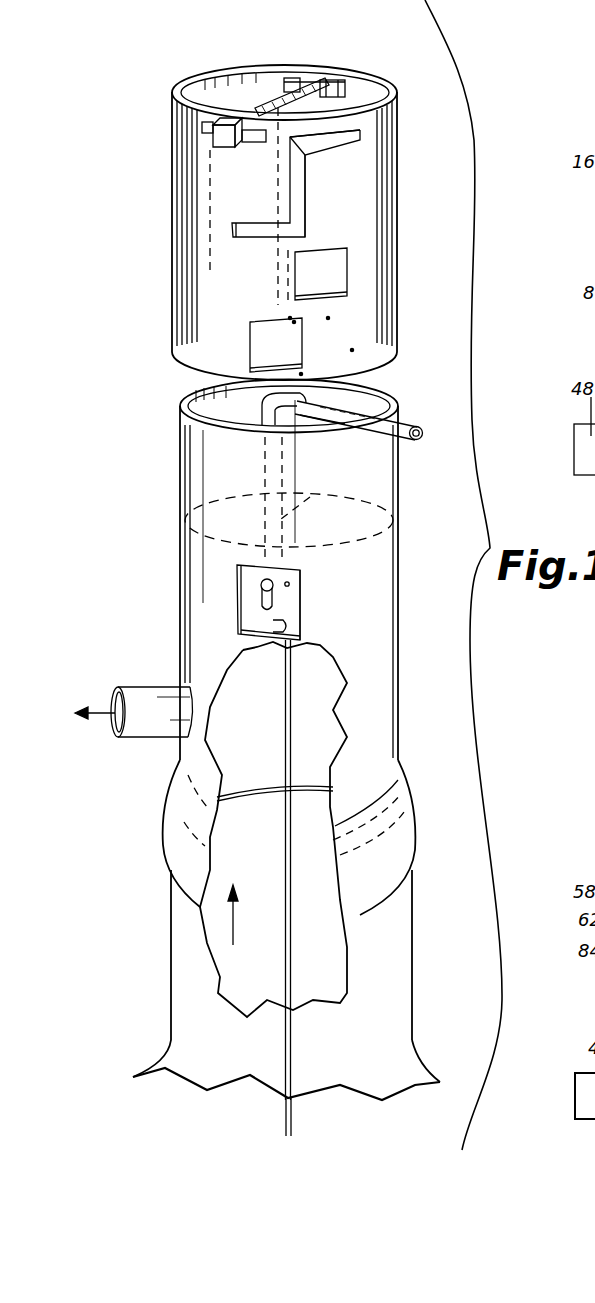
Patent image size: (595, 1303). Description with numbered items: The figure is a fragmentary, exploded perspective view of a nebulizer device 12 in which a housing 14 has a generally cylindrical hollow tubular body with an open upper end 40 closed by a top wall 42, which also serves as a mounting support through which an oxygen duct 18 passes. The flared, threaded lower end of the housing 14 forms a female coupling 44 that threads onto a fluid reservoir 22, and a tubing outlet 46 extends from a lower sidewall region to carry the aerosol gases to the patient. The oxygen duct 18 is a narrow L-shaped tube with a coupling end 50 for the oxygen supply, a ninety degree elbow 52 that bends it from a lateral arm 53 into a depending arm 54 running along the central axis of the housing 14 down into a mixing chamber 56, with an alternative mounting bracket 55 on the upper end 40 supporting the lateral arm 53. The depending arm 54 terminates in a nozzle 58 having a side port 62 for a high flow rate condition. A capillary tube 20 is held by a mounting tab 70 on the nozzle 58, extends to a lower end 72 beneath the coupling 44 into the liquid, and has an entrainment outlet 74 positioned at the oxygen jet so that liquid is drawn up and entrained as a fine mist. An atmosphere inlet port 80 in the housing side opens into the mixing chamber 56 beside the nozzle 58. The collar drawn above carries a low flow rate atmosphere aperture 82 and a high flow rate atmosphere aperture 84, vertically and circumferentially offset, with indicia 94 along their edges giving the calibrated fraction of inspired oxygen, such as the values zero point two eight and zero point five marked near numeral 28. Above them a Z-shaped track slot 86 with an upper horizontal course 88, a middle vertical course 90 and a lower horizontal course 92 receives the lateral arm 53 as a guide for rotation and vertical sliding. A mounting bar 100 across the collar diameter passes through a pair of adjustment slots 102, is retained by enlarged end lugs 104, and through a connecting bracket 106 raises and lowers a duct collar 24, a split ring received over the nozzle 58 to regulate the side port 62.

The nebulizer device 12 is at (76, 320).
The housing 14 is at (398, 586).
The oxygen duct 18 is at (380, 413).
The capillary tube 20 is at (284, 834).
The fluid reservoir 22 is at (166, 1040).
The duct collar 24 is at (192, 272).
The opening 28 is at (341, 314).
The open upper end 40 is at (207, 414).
The top wall 42 is at (183, 514).
The female coupling 44 is at (400, 815).
The tubing outlet 46 is at (148, 686).
The coupling end 50 is at (468, 440).
The ninety degree elbow 52 is at (270, 399).
The lateral arm 53 is at (360, 418).
The depending arm 54 is at (310, 497).
The alternative mounting bracket 55 is at (365, 386).
The mixing chamber 56 is at (262, 712).
The nozzle 58 is at (265, 612).
The side port 62 is at (265, 580).
The mounting tab 70 is at (288, 582).
The lower end 72 is at (293, 1125).
The entrainment outlet 74 is at (287, 628).
The atmosphere inlet port 80 is at (250, 592).
The low flow rate atmosphere aperture 82 is at (330, 268).
The high flow rate atmosphere aperture 84 is at (275, 345).
The track slot 86 is at (295, 177).
The upper horizontal course 88 is at (350, 118).
The middle vertical course 90 is at (307, 211).
The lower horizontal course 92 is at (246, 222).
The indicia 94 is at (287, 316).
The mounting bar 100 is at (270, 108).
The adjustment slots 102 is at (290, 78).
The end lugs 104 is at (220, 136).
The connecting bracket 106 is at (343, 92).